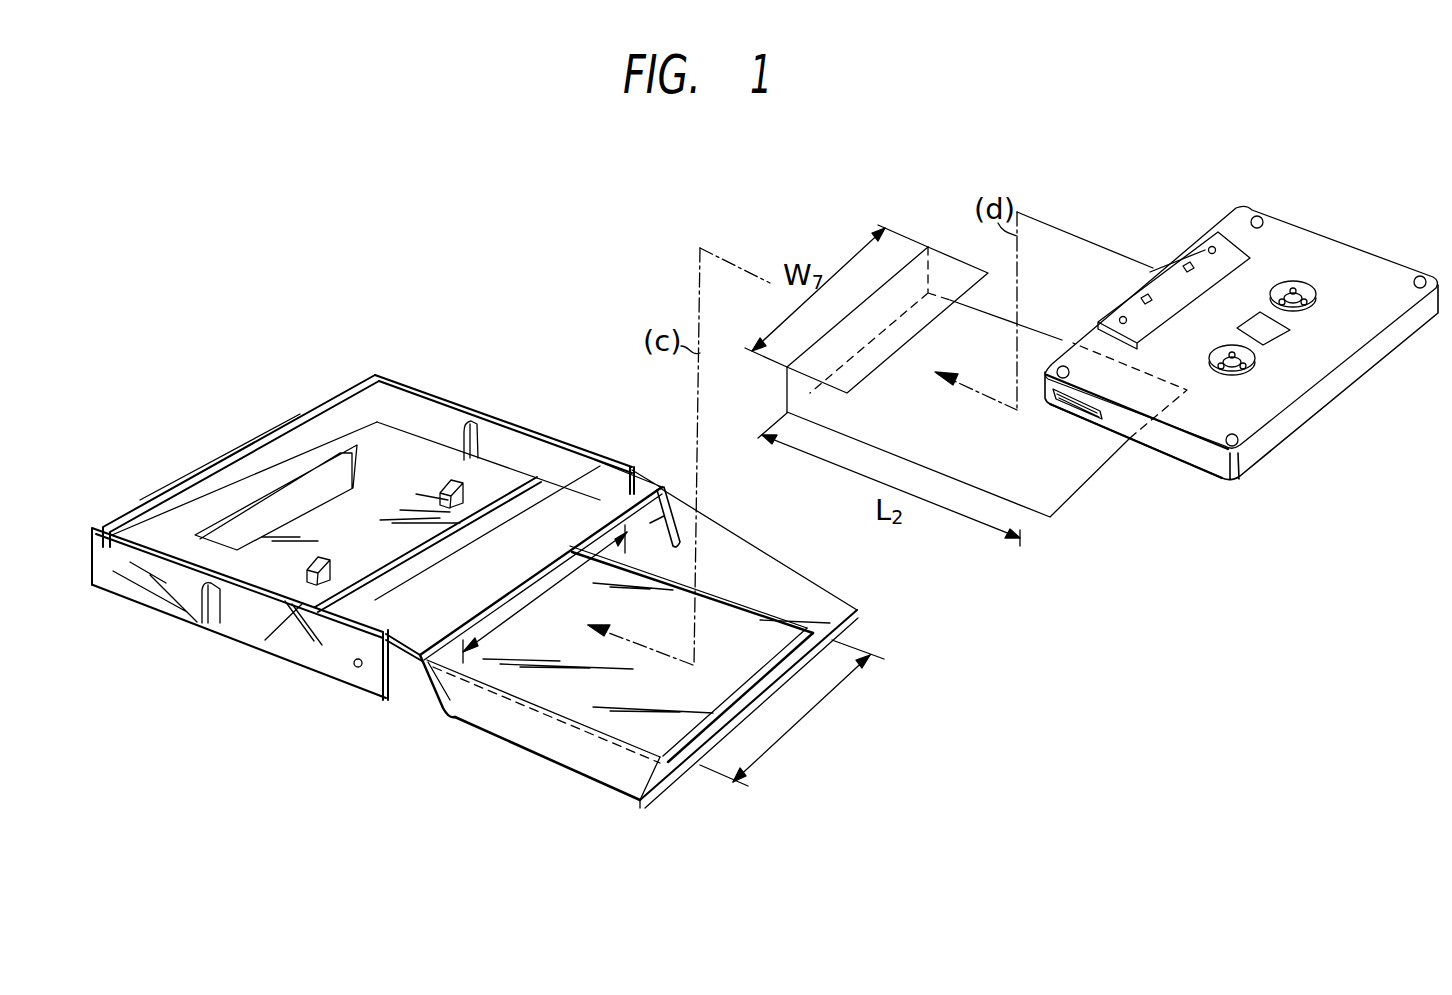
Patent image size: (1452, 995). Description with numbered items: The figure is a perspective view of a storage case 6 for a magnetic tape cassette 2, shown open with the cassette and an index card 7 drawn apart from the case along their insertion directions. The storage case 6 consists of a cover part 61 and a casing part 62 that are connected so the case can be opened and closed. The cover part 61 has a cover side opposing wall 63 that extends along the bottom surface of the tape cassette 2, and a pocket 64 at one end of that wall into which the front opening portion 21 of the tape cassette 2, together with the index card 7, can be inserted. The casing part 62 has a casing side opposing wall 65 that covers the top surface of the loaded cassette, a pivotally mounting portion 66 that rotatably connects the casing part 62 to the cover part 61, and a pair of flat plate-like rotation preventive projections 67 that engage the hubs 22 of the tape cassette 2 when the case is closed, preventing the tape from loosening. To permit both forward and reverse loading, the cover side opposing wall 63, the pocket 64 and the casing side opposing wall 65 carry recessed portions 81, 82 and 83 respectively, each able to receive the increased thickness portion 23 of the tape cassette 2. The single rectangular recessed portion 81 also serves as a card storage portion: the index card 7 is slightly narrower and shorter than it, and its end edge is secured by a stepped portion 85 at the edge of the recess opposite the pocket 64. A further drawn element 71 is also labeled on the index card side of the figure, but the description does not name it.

The tape cassette 2 is at (1241, 313).
The storage case 6 is at (363, 531).
The index card 7 is at (1085, 470).
The front opening portion 21 is at (1127, 297).
The hubs 22 is at (1300, 308).
The increased thickness portion 23 is at (1170, 282).
The cover part 61 is at (617, 616).
The casing part 62 is at (213, 460).
The cover side opposing wall 63 is at (553, 738).
The pocket 64 is at (455, 712).
The casing side opposing wall 65 is at (400, 437).
The pivotally mounting portion 66 is at (354, 666).
The rotation preventive projections 67 is at (440, 494).
The block 71 is at (785, 393).
The recessed portion 81 is at (742, 620).
The recessed portion 82 is at (556, 578).
The recessed portion 83 is at (337, 472).
The stepped portion 85 is at (800, 655).